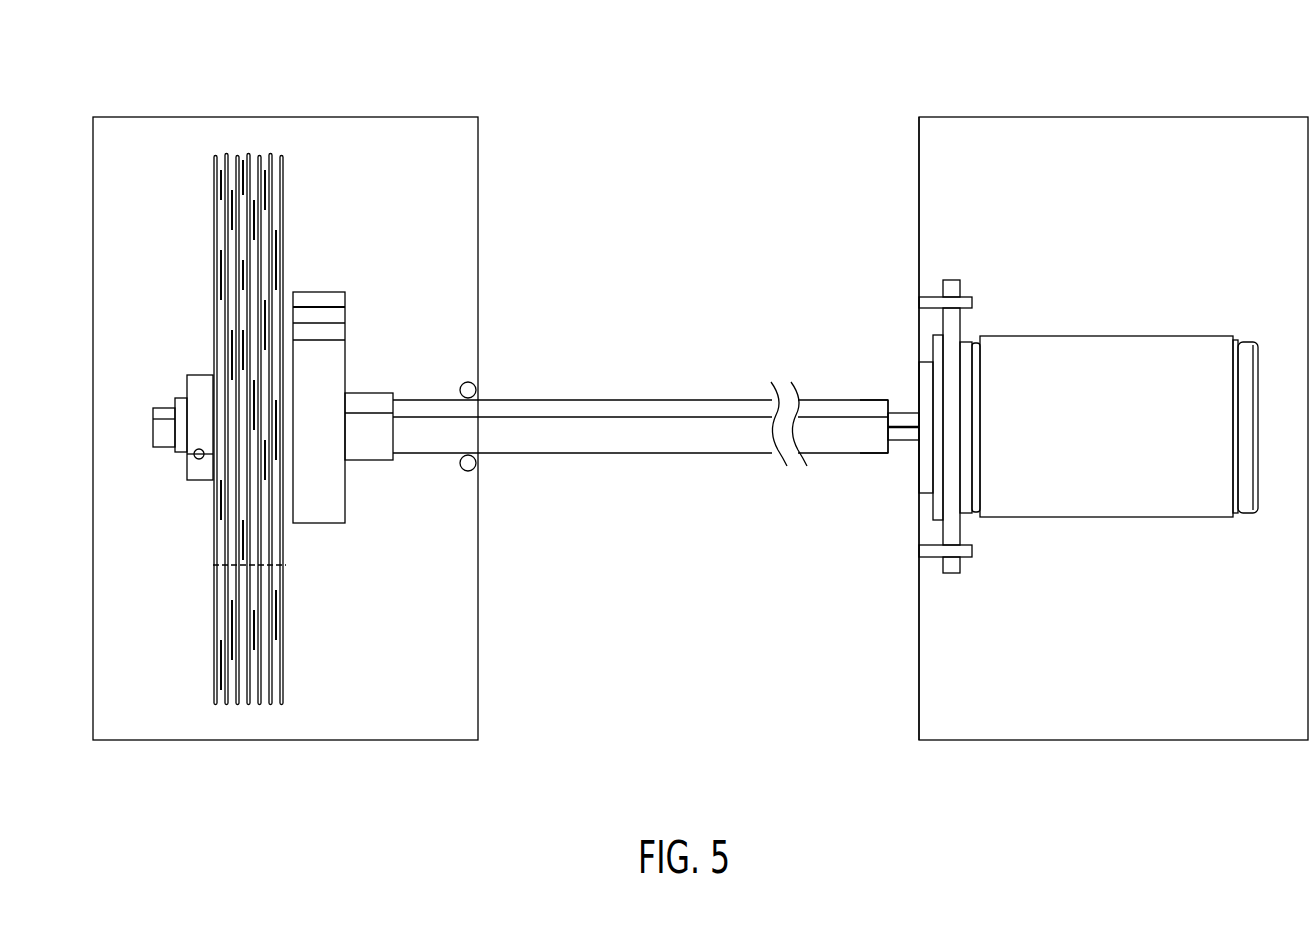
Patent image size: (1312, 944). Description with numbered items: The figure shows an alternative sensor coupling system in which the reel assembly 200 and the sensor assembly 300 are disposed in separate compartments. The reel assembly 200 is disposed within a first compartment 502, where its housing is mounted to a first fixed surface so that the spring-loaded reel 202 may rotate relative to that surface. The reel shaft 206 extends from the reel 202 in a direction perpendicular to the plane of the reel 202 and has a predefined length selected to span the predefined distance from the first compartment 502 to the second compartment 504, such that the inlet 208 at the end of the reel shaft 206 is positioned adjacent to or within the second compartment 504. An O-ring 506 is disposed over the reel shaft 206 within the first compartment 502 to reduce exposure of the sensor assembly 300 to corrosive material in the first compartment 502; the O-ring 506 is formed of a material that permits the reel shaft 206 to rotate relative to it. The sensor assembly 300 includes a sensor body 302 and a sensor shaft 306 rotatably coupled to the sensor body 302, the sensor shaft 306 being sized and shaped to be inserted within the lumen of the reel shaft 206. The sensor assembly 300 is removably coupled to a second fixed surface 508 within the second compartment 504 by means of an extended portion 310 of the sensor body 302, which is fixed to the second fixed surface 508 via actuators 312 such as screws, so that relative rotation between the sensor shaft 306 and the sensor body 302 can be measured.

The reel assembly 200 is at (222, 92).
The reel 202 is at (225, 258).
The reel shaft 206 is at (660, 408).
The inlet 208 is at (895, 452).
The sensor assembly 300 is at (1158, 252).
The sensor body 302 is at (1068, 350).
The sensor shaft 306 is at (902, 418).
The extended portion 310 is at (960, 280).
The actuators 312 is at (972, 300).
The first compartment 502 is at (152, 153).
The second compartment 504 is at (1299, 153).
The O-ring 506 is at (468, 378).
The second fixed surface 508 is at (921, 190).